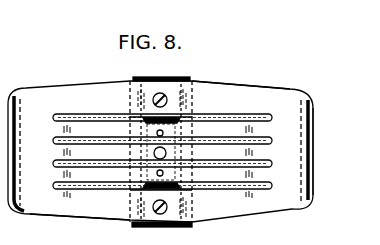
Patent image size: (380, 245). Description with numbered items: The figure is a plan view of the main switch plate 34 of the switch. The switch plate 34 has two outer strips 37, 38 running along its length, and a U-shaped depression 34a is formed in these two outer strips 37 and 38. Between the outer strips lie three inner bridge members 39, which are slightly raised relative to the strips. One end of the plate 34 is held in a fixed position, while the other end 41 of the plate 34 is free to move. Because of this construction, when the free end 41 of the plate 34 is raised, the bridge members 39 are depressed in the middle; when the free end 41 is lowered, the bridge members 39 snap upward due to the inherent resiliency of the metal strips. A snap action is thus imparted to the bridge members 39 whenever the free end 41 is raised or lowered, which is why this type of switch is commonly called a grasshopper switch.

The switch plate 34 is at (37, 204).
The U-shaped depression 34a is at (182, 103).
The outer strip 37 is at (75, 205).
The outer strip 38 is at (280, 96).
The inner bridge members 39 is at (85, 173).
The free end of plate 41 is at (310, 198).